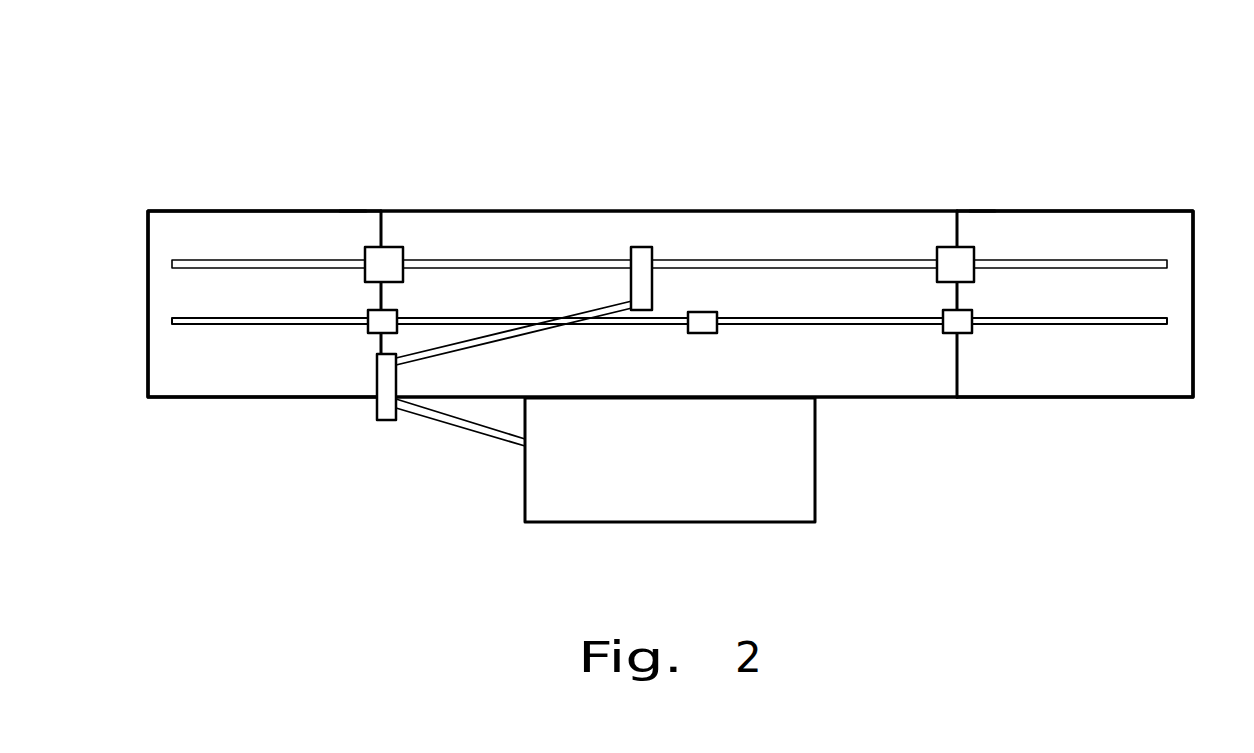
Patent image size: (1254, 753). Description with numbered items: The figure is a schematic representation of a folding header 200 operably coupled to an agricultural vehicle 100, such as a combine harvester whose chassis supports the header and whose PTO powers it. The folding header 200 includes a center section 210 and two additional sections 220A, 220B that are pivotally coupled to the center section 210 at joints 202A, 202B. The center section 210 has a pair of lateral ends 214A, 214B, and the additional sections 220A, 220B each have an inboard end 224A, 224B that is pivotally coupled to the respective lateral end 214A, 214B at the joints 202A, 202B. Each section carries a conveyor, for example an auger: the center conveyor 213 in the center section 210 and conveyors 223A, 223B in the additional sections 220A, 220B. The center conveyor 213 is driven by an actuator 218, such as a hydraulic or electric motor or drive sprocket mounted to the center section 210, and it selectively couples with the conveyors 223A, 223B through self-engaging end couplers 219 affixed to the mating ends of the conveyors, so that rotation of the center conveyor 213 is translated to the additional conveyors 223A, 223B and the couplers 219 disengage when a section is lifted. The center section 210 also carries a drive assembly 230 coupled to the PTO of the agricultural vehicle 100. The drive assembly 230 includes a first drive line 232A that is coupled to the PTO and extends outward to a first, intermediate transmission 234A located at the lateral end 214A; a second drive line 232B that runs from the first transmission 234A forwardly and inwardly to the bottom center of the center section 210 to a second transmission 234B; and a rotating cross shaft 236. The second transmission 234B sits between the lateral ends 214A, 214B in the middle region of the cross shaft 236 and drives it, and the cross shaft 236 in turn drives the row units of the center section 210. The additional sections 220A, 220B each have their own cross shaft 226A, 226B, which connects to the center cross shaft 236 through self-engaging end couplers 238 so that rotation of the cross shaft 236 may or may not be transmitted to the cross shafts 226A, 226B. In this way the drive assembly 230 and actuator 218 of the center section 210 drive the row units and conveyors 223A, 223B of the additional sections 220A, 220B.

The agricultural vehicle 100 is at (697, 475).
The folding header 200 is at (974, 517).
The joint 202A is at (381, 228).
The joint 202B is at (960, 228).
The center section 210 is at (683, 383).
The center conveyor 213 is at (913, 325).
The lateral end 214A is at (407, 179).
The lateral end 214B is at (938, 181).
The actuator 218 is at (717, 333).
The end coupler 219 is at (368, 333).
The additional section 220A is at (279, 386).
The additional section 220B is at (1102, 384).
The conveyor 223A is at (192, 324).
The conveyor 223B is at (1140, 325).
The inboard end 224A is at (353, 177).
The inboard end 224B is at (982, 181).
The cross shaft 226A is at (229, 260).
The cross shaft 226B is at (1104, 259).
The drive assembly 230 is at (488, 364).
The first drive line 232A is at (493, 440).
The second drive line 232B is at (613, 305).
The first transmission 234A is at (385, 410).
The second transmission 234B is at (641, 250).
The cross shaft 236 is at (719, 260).
The end coupler 238 is at (403, 249).